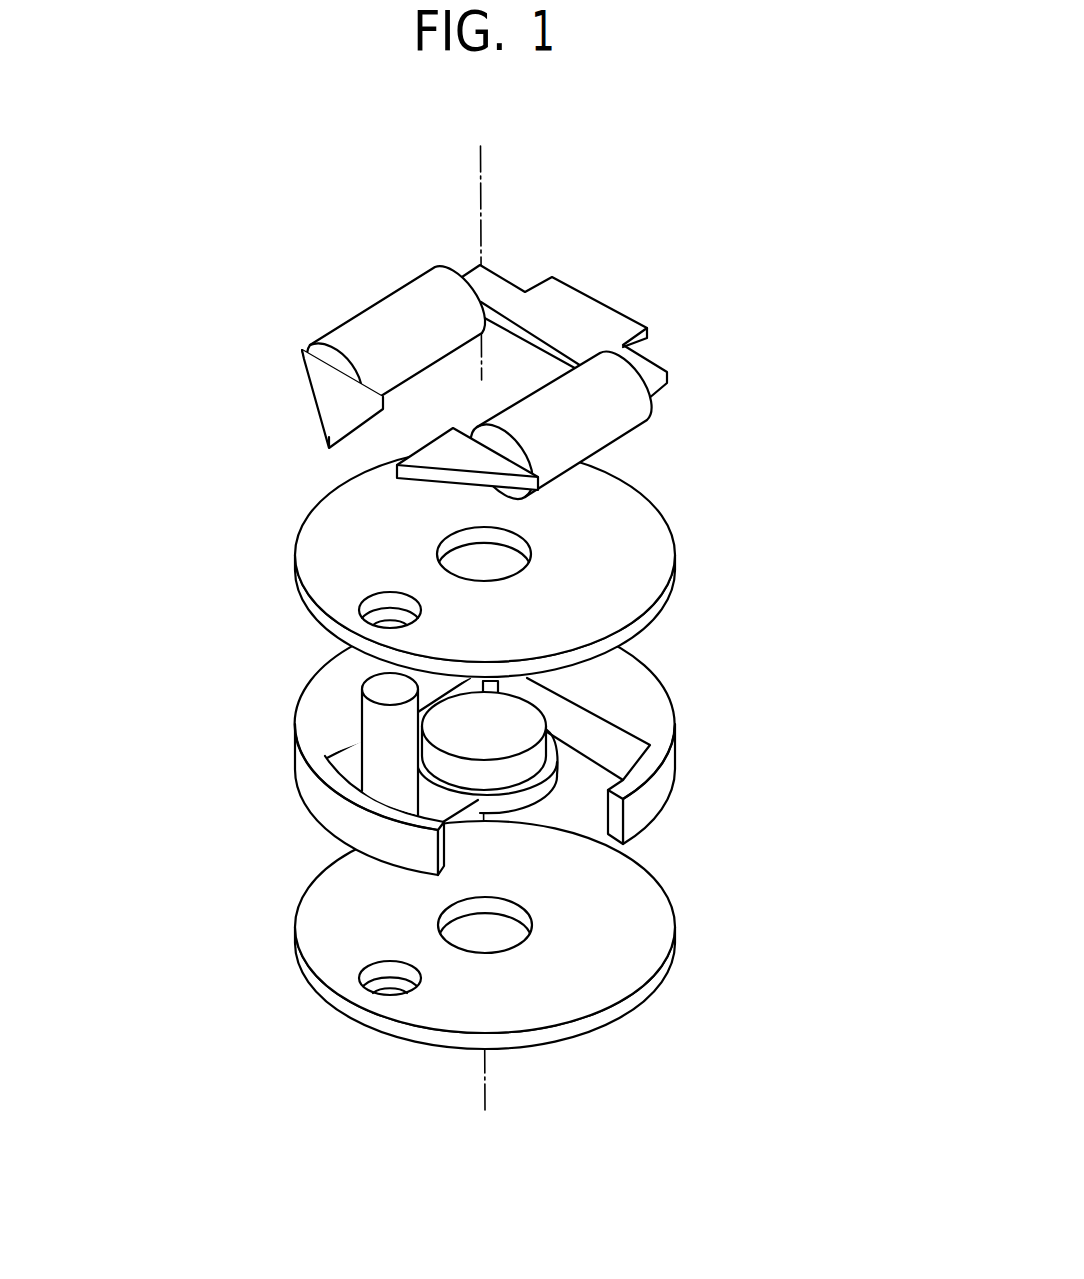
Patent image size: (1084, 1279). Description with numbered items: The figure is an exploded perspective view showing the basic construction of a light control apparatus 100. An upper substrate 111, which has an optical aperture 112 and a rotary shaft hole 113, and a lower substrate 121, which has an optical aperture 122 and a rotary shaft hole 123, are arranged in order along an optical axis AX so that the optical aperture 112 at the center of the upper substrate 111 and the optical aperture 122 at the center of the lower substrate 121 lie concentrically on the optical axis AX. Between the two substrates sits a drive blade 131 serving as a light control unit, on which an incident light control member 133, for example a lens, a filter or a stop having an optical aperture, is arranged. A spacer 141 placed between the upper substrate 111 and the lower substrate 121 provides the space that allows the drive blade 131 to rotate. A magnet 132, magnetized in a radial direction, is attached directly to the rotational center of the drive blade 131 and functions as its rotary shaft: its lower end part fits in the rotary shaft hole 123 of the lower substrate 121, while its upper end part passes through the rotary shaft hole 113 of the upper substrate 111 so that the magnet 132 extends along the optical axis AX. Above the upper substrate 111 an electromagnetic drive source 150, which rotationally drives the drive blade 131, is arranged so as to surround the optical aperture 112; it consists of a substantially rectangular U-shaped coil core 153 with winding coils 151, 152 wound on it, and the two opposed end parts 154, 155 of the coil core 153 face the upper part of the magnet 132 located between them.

The light control apparatus 100 is at (510, 1191).
The optical axis AX is at (481, 173).
The upper substrate 111 is at (628, 538).
The optical aperture 112 is at (480, 572).
The rotary shaft hole 113 is at (403, 628).
The lower substrate 121 is at (620, 946).
The optical aperture 122 is at (480, 950).
The rotary shaft hole 123 is at (368, 995).
The drive blade 131 is at (433, 802).
The magnet 132 is at (372, 722).
The incident light control member 133 is at (521, 765).
The spacer 141 is at (625, 688).
The electromagnetic drive source 150 is at (487, 362).
The winding coil 151 is at (382, 310).
The winding coil 152 is at (583, 420).
The coil core 153 is at (577, 302).
The end part 154 is at (333, 390).
The end part 155 is at (436, 455).